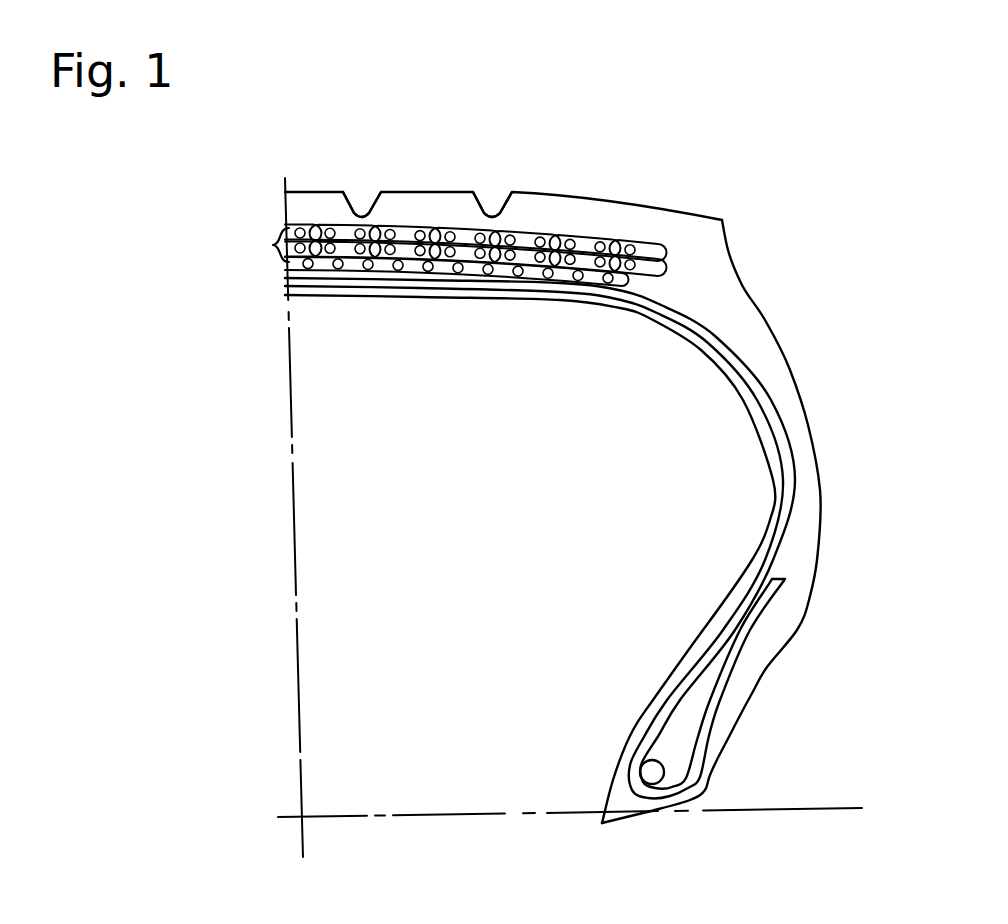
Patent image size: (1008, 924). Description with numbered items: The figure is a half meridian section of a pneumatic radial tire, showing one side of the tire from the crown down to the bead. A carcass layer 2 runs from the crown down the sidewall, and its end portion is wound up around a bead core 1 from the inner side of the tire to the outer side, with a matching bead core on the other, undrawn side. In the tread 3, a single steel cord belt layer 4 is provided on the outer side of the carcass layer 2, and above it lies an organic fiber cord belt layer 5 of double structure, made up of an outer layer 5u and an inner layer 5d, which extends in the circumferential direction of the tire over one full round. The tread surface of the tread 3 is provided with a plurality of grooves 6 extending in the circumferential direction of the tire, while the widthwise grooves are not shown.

The bead core 1 is at (667, 780).
The carcass layer 2 is at (787, 463).
The tread 3 is at (588, 218).
The steel cord belt layer 4 is at (443, 266).
The organic fiber cord belt layer 5 is at (266, 250).
The outer layer 5u is at (405, 226).
The inner layer 5d is at (348, 256).
The groove 6 is at (364, 212).